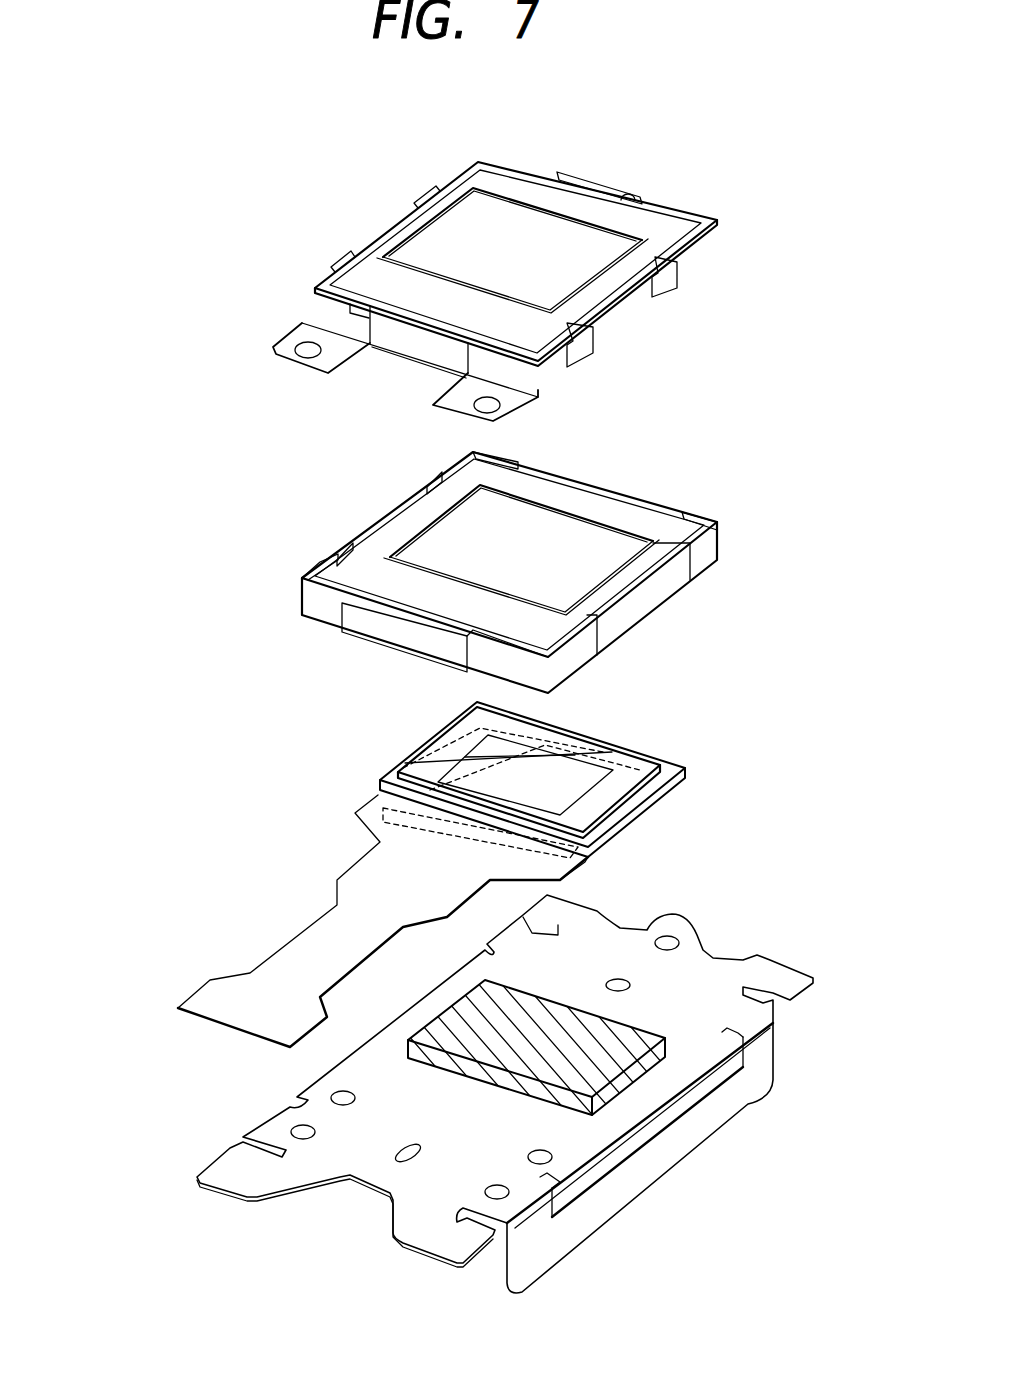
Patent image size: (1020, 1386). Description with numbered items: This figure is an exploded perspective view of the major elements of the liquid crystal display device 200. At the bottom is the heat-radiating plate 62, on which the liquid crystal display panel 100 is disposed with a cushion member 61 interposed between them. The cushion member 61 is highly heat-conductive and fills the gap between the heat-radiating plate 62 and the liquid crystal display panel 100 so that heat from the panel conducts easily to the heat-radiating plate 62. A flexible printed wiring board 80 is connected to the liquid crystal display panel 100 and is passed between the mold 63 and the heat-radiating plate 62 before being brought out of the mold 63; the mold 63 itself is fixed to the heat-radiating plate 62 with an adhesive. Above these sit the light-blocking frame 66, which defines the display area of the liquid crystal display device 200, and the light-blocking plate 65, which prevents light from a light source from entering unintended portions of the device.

The liquid crystal display device 200 is at (152, 1302).
The light-blocking plate 65 is at (620, 285).
The mold 63 is at (633, 610).
The light-blocking frame 66 is at (455, 720).
The liquid crystal display panel 100 is at (680, 783).
The flexible printed wiring board 80 is at (370, 868).
The cushion member 61 is at (600, 1053).
The heat-radiating plate 62 is at (577, 1143).